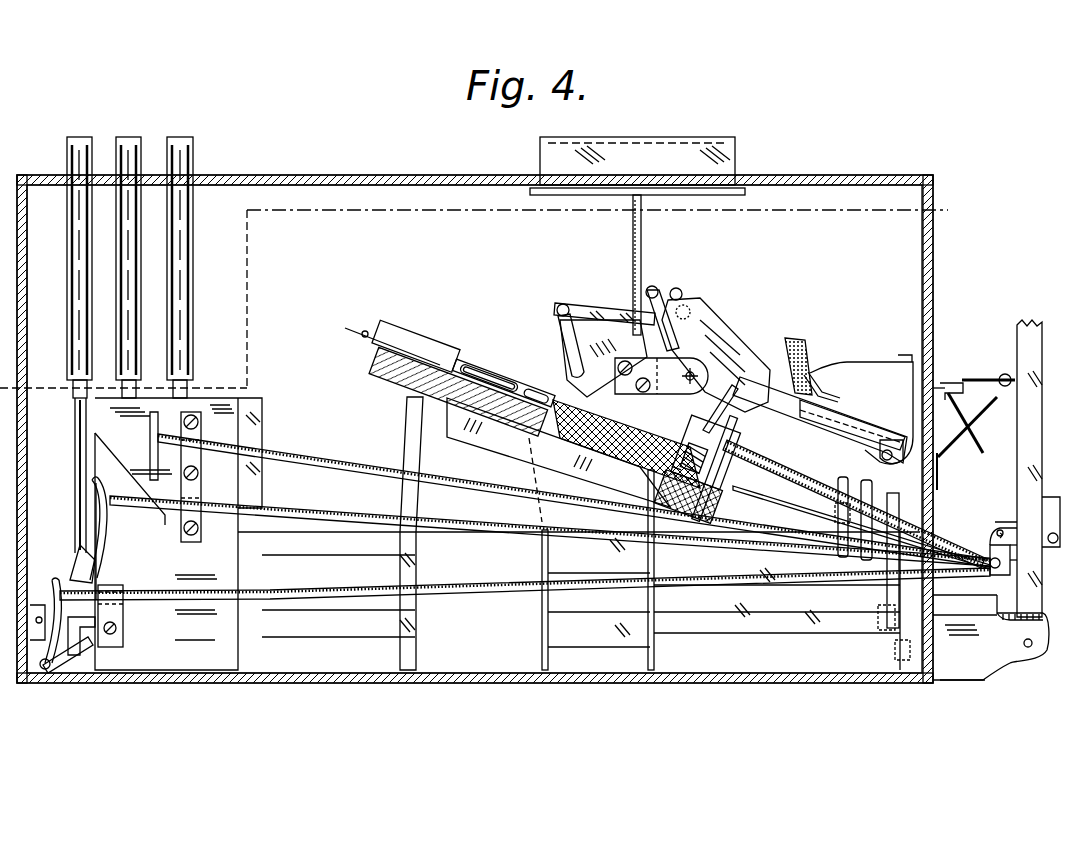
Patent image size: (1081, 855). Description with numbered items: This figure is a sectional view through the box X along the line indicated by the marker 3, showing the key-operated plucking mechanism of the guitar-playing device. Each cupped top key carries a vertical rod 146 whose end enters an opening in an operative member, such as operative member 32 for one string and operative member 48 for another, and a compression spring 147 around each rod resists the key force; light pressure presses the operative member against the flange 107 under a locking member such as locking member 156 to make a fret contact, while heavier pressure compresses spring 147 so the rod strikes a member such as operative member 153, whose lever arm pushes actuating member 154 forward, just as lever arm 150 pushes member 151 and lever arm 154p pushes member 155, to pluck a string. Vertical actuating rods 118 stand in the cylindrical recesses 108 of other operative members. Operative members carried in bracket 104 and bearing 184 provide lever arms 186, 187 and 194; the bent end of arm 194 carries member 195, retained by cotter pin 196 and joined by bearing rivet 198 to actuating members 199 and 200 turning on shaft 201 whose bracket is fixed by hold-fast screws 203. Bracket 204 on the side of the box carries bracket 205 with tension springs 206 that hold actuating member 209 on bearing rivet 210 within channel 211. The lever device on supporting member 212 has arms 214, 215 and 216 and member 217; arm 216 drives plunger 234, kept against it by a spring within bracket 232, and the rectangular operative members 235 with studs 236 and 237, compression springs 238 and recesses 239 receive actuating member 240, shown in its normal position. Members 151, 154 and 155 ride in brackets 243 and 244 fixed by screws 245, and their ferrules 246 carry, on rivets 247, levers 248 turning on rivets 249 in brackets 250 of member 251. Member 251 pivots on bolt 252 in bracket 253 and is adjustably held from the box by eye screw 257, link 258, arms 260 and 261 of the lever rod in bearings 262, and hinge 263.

The section line 3 is at (940, 207).
The box X is at (935, 253).
The operative member 32 is at (345, 455).
The operative member 48 is at (581, 592).
The bracket 104 is at (566, 378).
The flange 107 is at (79, 634).
The vertical cylindrical recess 108 is at (835, 508).
The vertical actuating rod 118 is at (846, 480).
The vertical rod 146 is at (203, 396).
The compression spring 147 is at (95, 585).
The lever arm 150 is at (158, 415).
The actuating member 151 is at (305, 447).
The operative member 153 is at (110, 495).
The actuating member 154 is at (333, 512).
The curved lever 154p is at (56, 578).
The actuating member 155 is at (275, 592).
The locking member 156 is at (70, 683).
The bearing 184 is at (658, 287).
The lever arm 186 is at (685, 306).
The lever arm 187 is at (664, 343).
The lever arm 194 is at (560, 333).
The member 195 is at (600, 305).
The cotter pin 196 is at (552, 310).
The bearing rivet 198 is at (700, 322).
The actuating member 199 is at (725, 308).
The actuating member 200 is at (735, 330).
The shaft 201 is at (735, 352).
The hold fast screw 203 is at (620, 380).
The bracket 204 is at (855, 365).
The bracket 205 is at (820, 365).
The tension spring 206 is at (790, 343).
The actuating member 209 is at (803, 430).
The bearing rivet 210 is at (887, 461).
The channel 211 is at (838, 422).
The supporting member 212 is at (372, 372).
The lever arm 214 is at (408, 342).
The lever arm 215 is at (498, 372).
The lever arm 216 is at (553, 392).
The member 217 is at (358, 332).
The bracket 232 is at (600, 412).
The operative plunger 234 is at (642, 437).
The rectangular operative member 235 is at (737, 474).
The stud 236 is at (730, 414).
The stud 237 is at (692, 500).
The compression spring 238 is at (700, 479).
The recess 239 is at (735, 489).
The actuating member 240 is at (792, 474).
The bracket 243 is at (203, 465).
The bracket 244 is at (125, 613).
The screw 245 is at (198, 422).
The ferrule 246 is at (990, 545).
The rivet 247 is at (988, 572).
The lever 248 is at (995, 525).
The rivet 249 is at (993, 515).
The bracket 250 is at (1010, 515).
The member 251 is at (1017, 330).
The bolt 252 is at (1025, 646).
The bracket 253 is at (955, 680).
The eye screw 257 is at (1005, 374).
The link 258 is at (960, 382).
The lever arm 260 is at (958, 372).
The lever arm 261 is at (970, 440).
The bearing 262 is at (955, 405).
The hinge 263 is at (970, 425).